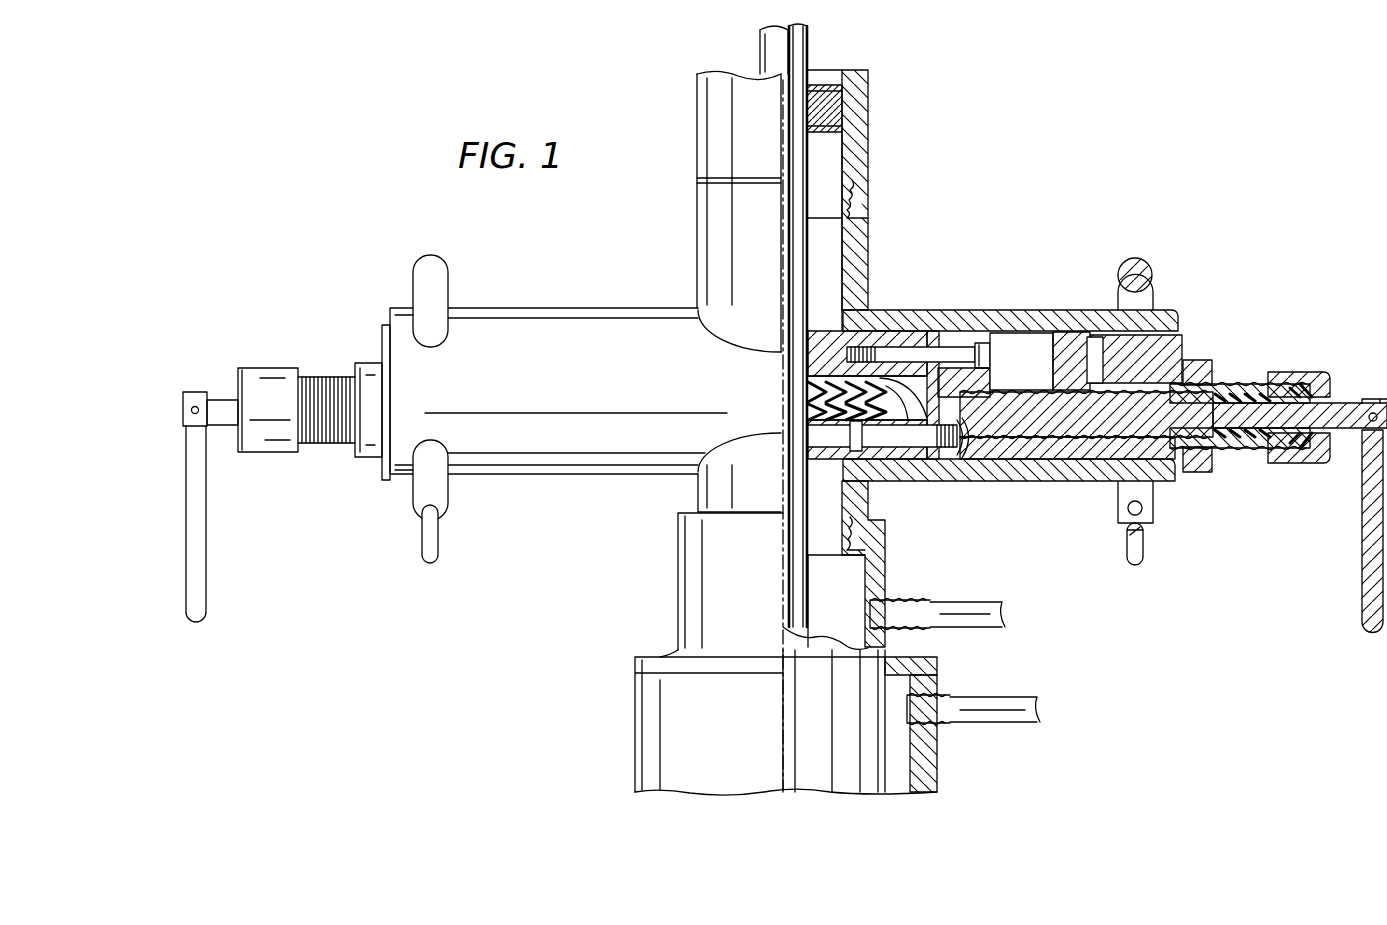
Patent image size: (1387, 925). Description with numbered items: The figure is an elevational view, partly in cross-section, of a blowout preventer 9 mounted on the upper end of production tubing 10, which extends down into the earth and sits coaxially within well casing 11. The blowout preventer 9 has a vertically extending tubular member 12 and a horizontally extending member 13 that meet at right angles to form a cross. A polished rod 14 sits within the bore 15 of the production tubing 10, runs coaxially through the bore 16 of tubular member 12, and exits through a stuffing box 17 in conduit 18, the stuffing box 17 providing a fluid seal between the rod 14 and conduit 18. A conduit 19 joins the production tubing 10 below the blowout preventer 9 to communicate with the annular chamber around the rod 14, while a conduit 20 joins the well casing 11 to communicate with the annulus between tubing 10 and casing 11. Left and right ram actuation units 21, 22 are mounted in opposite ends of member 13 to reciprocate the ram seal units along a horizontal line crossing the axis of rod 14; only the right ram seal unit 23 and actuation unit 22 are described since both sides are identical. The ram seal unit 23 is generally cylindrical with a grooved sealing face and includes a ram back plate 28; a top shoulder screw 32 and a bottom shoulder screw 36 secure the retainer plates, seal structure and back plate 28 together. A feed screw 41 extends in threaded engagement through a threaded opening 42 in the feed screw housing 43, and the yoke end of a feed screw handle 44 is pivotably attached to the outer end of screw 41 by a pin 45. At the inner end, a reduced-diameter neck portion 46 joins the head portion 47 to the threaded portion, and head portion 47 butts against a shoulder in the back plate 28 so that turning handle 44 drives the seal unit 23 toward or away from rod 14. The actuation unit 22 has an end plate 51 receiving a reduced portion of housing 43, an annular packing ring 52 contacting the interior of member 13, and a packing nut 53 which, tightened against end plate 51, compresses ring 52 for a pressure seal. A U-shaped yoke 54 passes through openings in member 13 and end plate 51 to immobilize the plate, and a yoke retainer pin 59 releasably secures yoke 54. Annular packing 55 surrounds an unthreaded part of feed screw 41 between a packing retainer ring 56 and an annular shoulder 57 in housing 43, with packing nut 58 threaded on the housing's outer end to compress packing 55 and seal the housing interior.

The blowout preventer 9 is at (615, 247).
The production tubing 10 is at (678, 613).
The well casing 11 is at (635, 705).
The tubular member 12 is at (868, 235).
The horizontally extending member 13 is at (928, 310).
The polished rod 14 is at (760, 50).
The bore 15 is at (851, 605).
The bore 16 is at (835, 252).
The stuffing box 17 is at (827, 82).
The conduit 18 is at (697, 112).
The conduit 19 is at (965, 600).
The conduit 20 is at (1005, 695).
The left ram actuation unit 21 is at (372, 330).
The right ram actuation unit 22 is at (1275, 465).
The right ram seal unit 23 is at (822, 324).
The ram back plate 28 is at (995, 385).
The top shoulder screw 32 is at (978, 343).
The bottom shoulder screw 36 is at (840, 460).
The feed screw 41 is at (1022, 455).
The threaded opening 42 is at (1050, 450).
The feed screw housing 43 is at (1047, 360).
The feed screw handle 44 is at (1362, 545).
The pin 45 is at (1373, 399).
The neck portion 46 is at (975, 460).
The head portion 47 is at (955, 470).
The end plate 51 is at (1182, 335).
The annular packing ring 52 is at (1068, 330).
The packing nut 53 is at (1212, 365).
The U-shaped yoke 54 is at (1150, 265).
The annular packing 55 is at (1243, 448).
The packing retainer ring 56 is at (1312, 463).
The annular shoulder 57 is at (1190, 478).
The packing nut 58 is at (1310, 372).
The yoke retainer pin 59 is at (1125, 515).